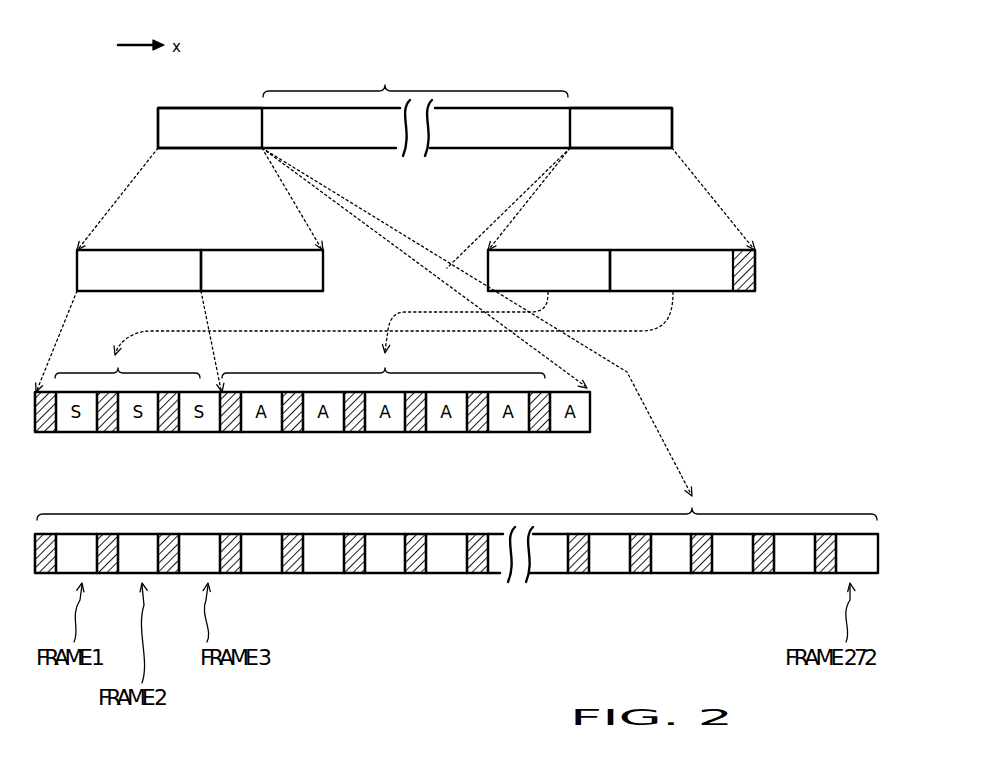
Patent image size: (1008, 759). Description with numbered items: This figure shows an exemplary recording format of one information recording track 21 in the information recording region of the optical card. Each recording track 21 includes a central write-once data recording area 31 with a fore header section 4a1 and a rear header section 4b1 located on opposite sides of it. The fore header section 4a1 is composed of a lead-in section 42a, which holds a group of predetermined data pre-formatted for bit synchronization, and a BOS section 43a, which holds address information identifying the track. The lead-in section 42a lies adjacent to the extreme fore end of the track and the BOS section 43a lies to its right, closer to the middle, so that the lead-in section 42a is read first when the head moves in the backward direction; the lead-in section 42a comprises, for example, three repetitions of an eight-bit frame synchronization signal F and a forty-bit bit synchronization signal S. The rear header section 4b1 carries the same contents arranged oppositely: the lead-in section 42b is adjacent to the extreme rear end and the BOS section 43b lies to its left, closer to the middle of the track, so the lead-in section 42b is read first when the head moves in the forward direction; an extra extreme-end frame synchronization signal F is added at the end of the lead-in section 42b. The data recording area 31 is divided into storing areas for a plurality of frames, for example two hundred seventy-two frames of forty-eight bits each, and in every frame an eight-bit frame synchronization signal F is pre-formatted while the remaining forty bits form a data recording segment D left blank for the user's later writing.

The information recording track 21 is at (148, 123).
The fore header section 4a1 is at (219, 107).
The rear header section 4b1 is at (607, 107).
The data recording area 31 is at (757, 468).
The lead-in section 42a is at (127, 249).
The BOS section 43a is at (255, 249).
The BOS section 43b is at (542, 249).
The lead-in section 42b is at (665, 249).
The frame synchronization signal F is at (748, 293).